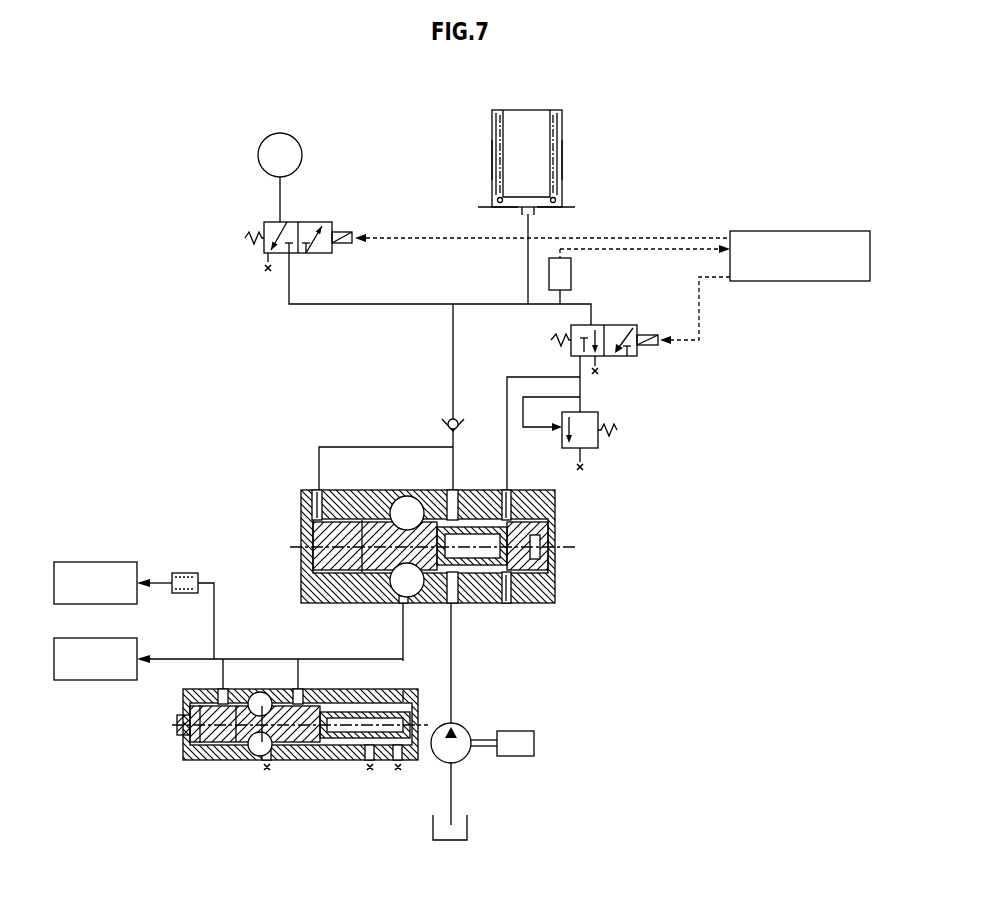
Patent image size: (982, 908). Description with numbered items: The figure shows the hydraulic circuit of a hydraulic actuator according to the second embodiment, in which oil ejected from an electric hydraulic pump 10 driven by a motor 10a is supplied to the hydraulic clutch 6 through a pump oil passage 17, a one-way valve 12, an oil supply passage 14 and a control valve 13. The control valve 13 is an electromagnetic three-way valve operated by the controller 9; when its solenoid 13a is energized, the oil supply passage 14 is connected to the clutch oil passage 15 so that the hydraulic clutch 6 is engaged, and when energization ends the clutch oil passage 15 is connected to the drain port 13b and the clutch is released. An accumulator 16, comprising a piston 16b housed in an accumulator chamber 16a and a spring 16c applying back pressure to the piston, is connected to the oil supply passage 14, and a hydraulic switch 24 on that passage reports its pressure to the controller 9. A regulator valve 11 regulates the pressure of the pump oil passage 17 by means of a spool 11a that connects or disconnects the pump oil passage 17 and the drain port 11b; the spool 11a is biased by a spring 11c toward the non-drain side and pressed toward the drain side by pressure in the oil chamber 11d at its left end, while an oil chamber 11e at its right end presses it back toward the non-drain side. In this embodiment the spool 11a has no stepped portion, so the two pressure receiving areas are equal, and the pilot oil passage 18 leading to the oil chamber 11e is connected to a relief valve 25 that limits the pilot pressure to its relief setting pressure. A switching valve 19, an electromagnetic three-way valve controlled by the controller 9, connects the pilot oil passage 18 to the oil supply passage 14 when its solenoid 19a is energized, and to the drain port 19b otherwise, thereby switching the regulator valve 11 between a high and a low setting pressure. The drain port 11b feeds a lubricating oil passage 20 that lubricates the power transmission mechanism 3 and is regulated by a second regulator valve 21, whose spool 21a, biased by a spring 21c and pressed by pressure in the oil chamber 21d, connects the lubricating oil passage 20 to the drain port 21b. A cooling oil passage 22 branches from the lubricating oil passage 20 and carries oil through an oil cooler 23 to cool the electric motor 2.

The electric motor 2 is at (89, 595).
The power transmission mechanism 3 is at (89, 671).
The hydraulic clutch 6 is at (274, 167).
The controller 9 is at (782, 231).
The electric hydraulic pump 10 is at (466, 727).
The motor 10a is at (525, 731).
The regulator valve 11 is at (370, 484).
The spool 11a is at (363, 568).
The drain port 11b is at (412, 585).
The spring 11c is at (499, 489).
The oil chamber 11d is at (322, 604).
The oil chamber 11e is at (508, 604).
The one-way valve 12 is at (446, 420).
The control valve 13 is at (310, 215).
The solenoid 13a is at (338, 232).
The drain port 13b is at (265, 262).
The oil supply passage 14 is at (406, 304).
The clutch oil passage 15 is at (278, 212).
The accumulator 16 is at (552, 100).
The accumulator chamber 16a is at (559, 165).
The piston 16b is at (540, 208).
The spring 16c is at (491, 158).
The pump oil passage 17 is at (456, 632).
The pilot oil passage 18 is at (532, 376).
The switching valve 19 is at (608, 320).
The solenoid 19a is at (645, 333).
The drain port 19b is at (603, 360).
The lubricating oil passage 20 is at (252, 659).
The second regulator valve 21 is at (307, 778).
The spool 21a is at (236, 746).
The drain port 21b is at (260, 747).
The spring 21c is at (402, 690).
The oil chamber 21d is at (212, 762).
The cooling oil passage 22 is at (215, 622).
The oil cooler 23 is at (192, 572).
The hydraulic switch 24 is at (572, 272).
The relief valve 25 is at (597, 420).